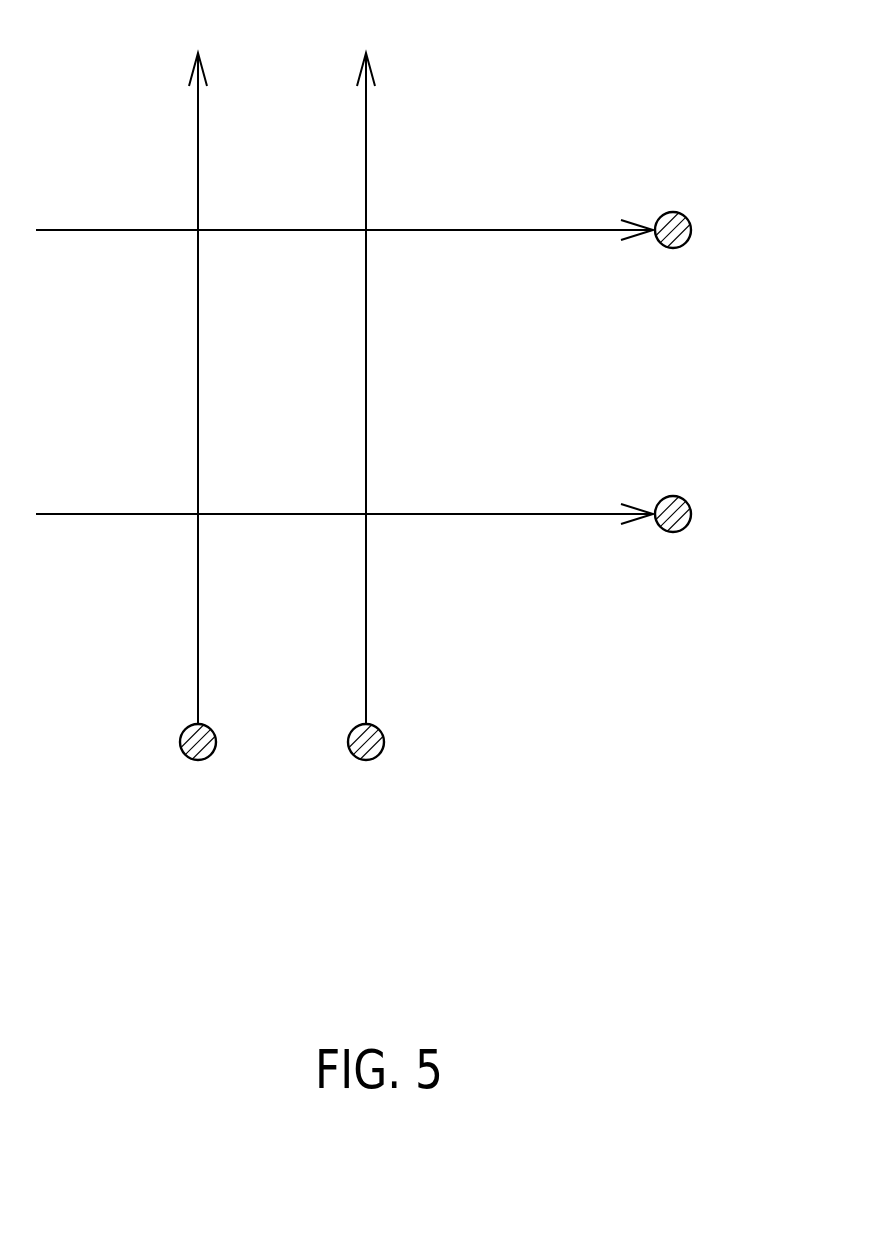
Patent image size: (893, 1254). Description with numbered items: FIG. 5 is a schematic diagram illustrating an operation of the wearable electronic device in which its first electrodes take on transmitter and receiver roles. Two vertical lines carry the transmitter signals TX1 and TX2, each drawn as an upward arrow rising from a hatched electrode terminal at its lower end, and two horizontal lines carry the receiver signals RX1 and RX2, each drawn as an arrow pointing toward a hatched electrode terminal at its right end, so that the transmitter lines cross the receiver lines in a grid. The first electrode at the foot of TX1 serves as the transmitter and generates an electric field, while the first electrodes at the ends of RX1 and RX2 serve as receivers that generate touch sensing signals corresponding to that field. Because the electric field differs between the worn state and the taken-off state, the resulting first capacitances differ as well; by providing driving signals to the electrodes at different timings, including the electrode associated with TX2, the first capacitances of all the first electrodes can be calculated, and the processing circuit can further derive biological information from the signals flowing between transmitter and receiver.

The transmitter TX1 is at (198, 368).
The transmitter TX2 is at (365, 368).
The receiver RX1 is at (344, 214).
The receiver RX2 is at (344, 498).